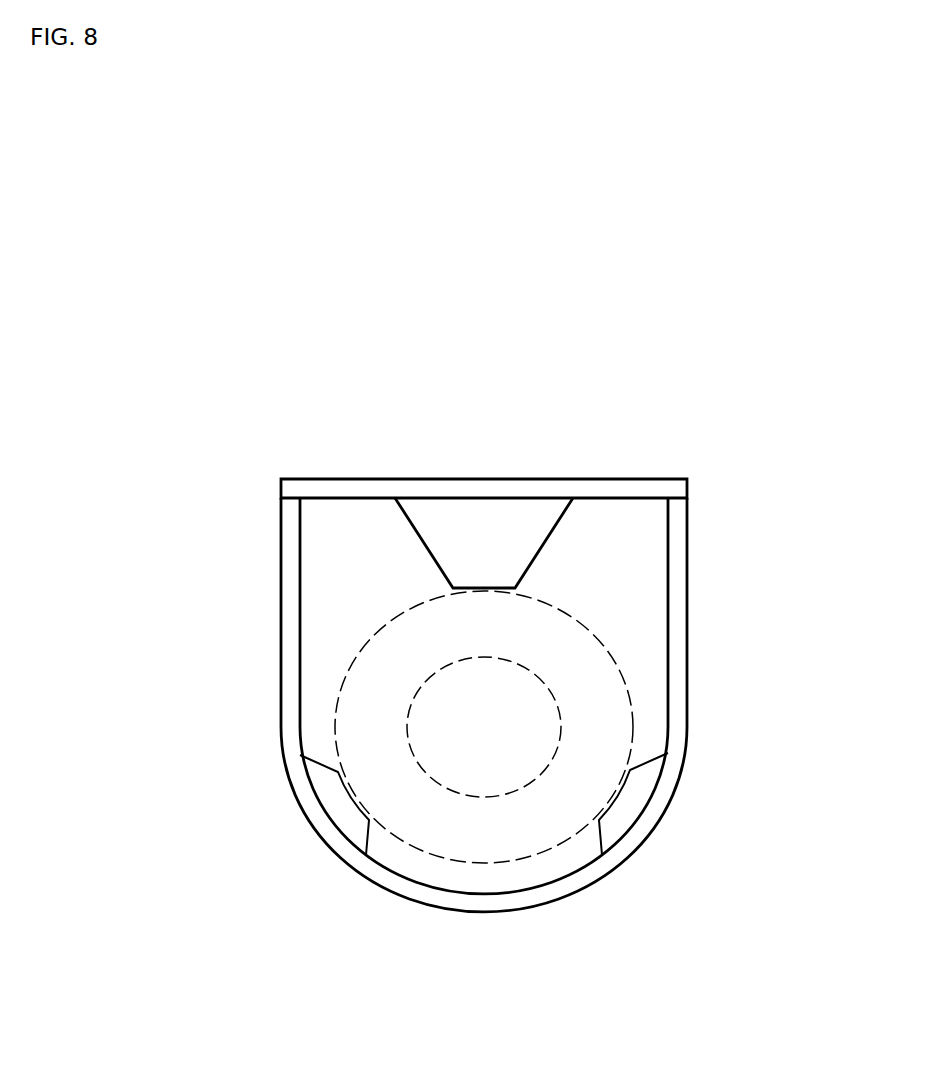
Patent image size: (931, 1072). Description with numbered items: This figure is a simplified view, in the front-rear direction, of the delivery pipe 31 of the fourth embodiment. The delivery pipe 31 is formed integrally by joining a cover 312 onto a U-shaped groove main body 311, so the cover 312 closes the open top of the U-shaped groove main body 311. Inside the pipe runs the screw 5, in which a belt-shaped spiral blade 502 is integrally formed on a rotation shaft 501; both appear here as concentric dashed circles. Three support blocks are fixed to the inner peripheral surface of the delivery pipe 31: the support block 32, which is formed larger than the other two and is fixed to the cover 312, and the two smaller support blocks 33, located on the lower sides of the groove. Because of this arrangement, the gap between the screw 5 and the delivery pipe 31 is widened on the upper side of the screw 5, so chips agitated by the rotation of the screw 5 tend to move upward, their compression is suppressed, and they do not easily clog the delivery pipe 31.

The delivery pipe 31 is at (426, 637).
The U-shaped groove main body 311 is at (290, 565).
The cover 312 is at (327, 487).
The support block 32 is at (468, 518).
The support blocks 33 is at (330, 793).
The screw 5 is at (587, 706).
The rotation shaft 501 is at (517, 665).
The spiral blade 502 is at (615, 658).